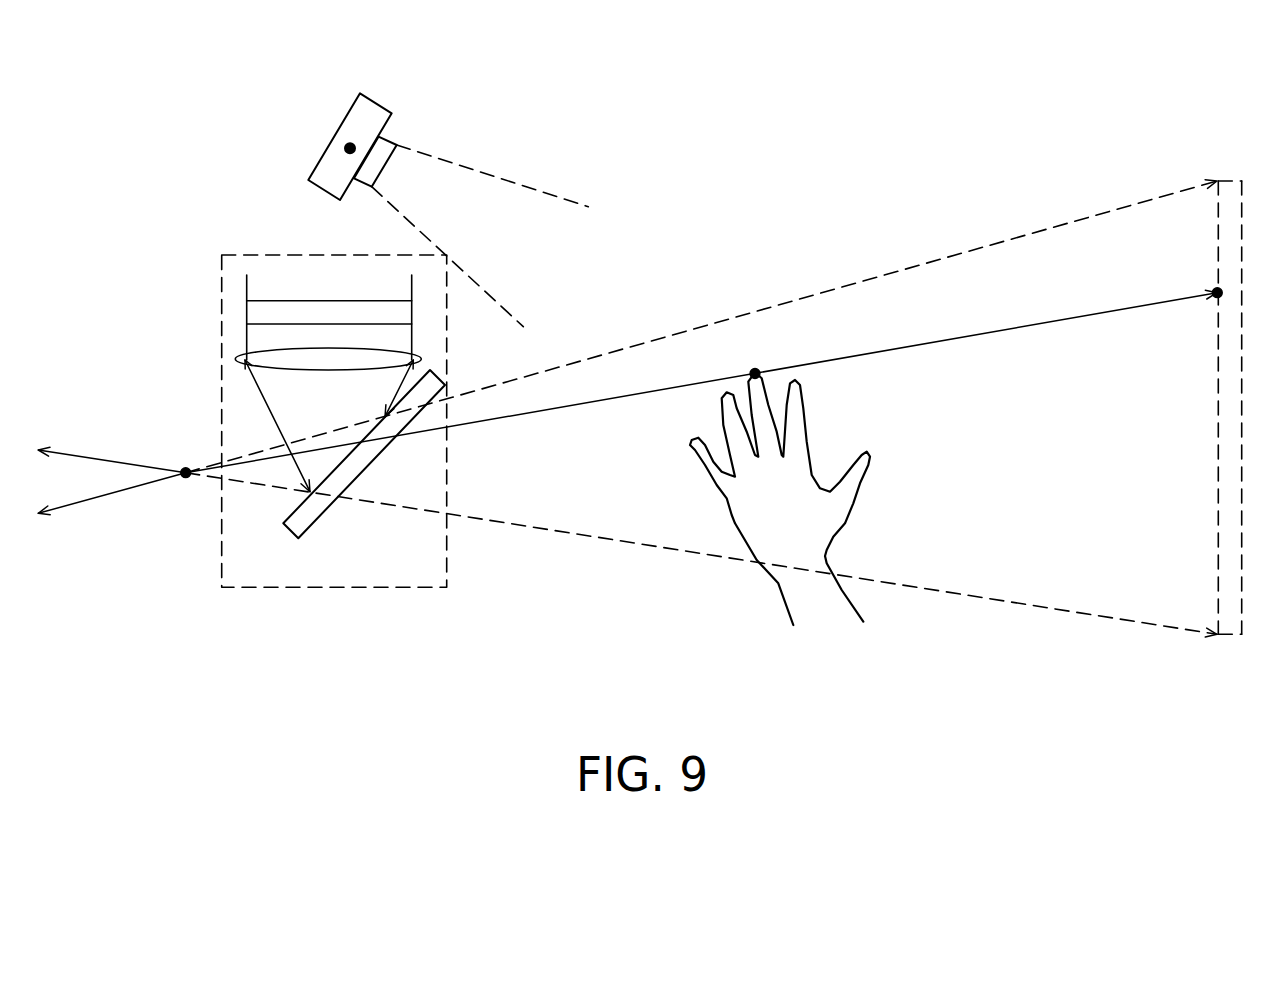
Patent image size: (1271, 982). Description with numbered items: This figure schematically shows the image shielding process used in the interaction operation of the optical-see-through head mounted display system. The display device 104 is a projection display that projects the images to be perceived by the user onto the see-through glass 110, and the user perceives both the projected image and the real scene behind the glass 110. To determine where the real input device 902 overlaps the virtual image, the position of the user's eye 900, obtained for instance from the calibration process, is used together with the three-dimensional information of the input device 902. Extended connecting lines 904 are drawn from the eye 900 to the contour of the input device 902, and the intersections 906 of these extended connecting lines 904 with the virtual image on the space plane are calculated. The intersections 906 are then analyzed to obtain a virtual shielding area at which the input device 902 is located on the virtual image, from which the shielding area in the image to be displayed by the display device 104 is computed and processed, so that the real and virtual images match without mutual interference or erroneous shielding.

The display device 104 is at (325, 588).
The see-through glass 110 is at (370, 452).
The eye 900 is at (184, 464).
The input device 902 is at (790, 580).
The extended connecting lines 904 is at (1063, 320).
The intersections 906 is at (1226, 286).